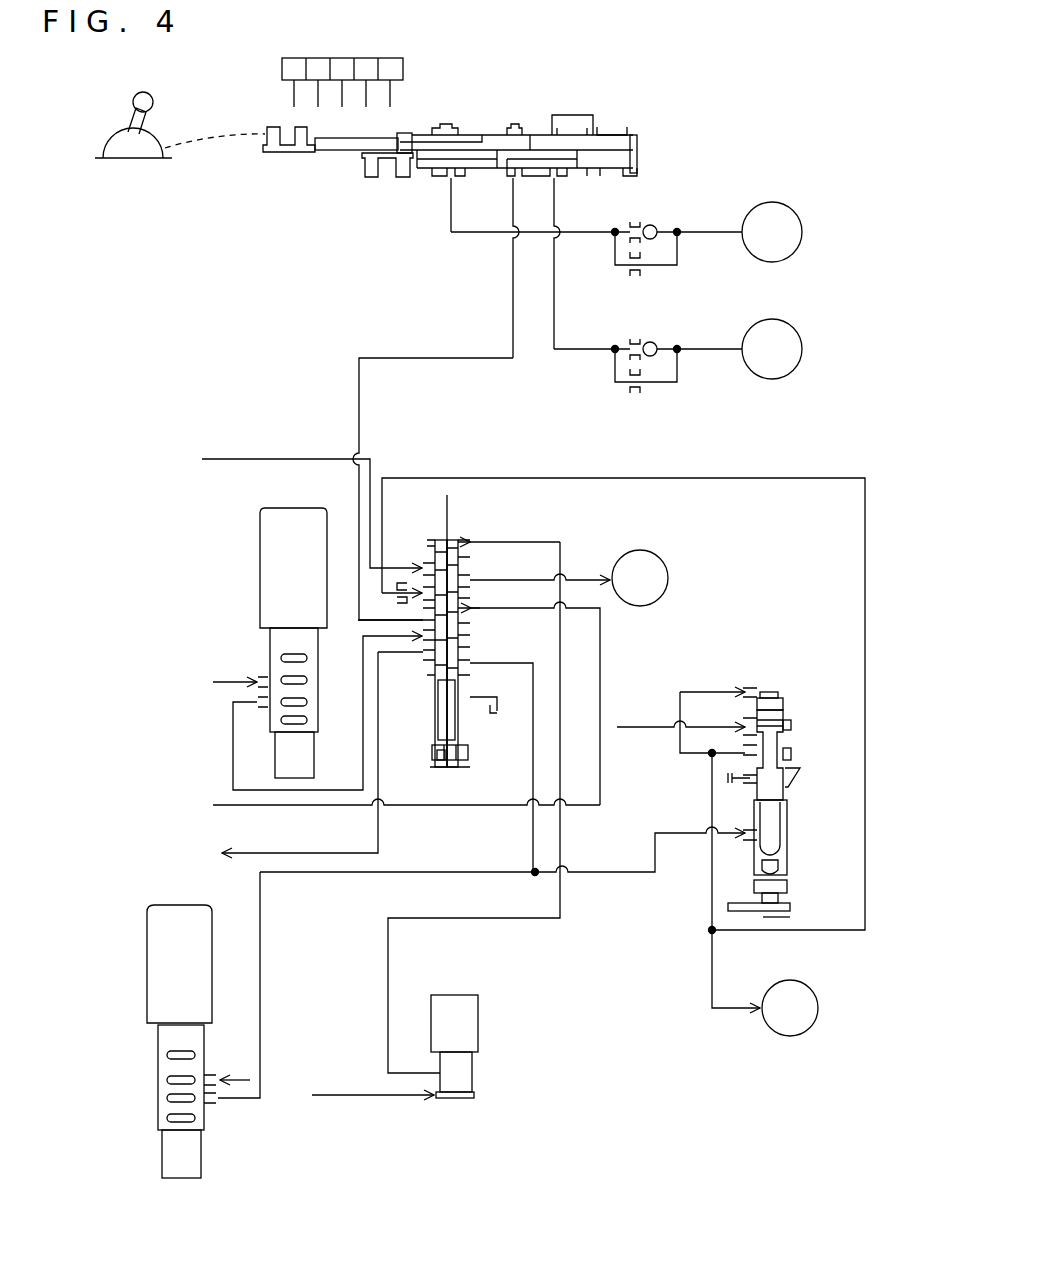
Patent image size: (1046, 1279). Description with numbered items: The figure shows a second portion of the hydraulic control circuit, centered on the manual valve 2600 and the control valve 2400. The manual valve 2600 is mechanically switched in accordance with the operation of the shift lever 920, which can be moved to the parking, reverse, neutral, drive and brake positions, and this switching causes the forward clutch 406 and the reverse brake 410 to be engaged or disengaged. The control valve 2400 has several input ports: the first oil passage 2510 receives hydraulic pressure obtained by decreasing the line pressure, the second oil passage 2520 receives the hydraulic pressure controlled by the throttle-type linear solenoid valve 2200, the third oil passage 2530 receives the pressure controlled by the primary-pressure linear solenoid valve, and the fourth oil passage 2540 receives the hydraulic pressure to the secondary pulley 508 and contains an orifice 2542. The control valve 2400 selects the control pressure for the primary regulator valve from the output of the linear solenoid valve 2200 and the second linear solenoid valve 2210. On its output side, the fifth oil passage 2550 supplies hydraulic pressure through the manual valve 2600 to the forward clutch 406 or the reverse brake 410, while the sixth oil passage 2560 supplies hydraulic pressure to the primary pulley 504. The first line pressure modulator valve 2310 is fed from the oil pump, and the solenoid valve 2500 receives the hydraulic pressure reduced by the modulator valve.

The shift lever 920 is at (135, 127).
The manual valve 2600 is at (638, 90).
The reverse brake 410 is at (760, 206).
The forward clutch 406 is at (762, 324).
The fifth oil passage 2550 is at (437, 357).
The third oil passage 2530 is at (292, 458).
The SLT linear solenoid valve 2200 is at (303, 508).
The fourth oil passage 2540 is at (610, 478).
The sixth oil passage 2560 is at (586, 578).
The primary pulley 504 is at (658, 556).
The first oil passage 2510 is at (600, 677).
The LPM 1 valve 2310 is at (787, 688).
The orifice 2542 is at (400, 606).
The control valve 2400 is at (462, 718).
The second oil passage 2520 is at (265, 792).
The SLS linear solenoid valve 2210 is at (147, 956).
The SL solenoid valve 2500 is at (472, 1072).
The secondary pulley 508 is at (808, 984).